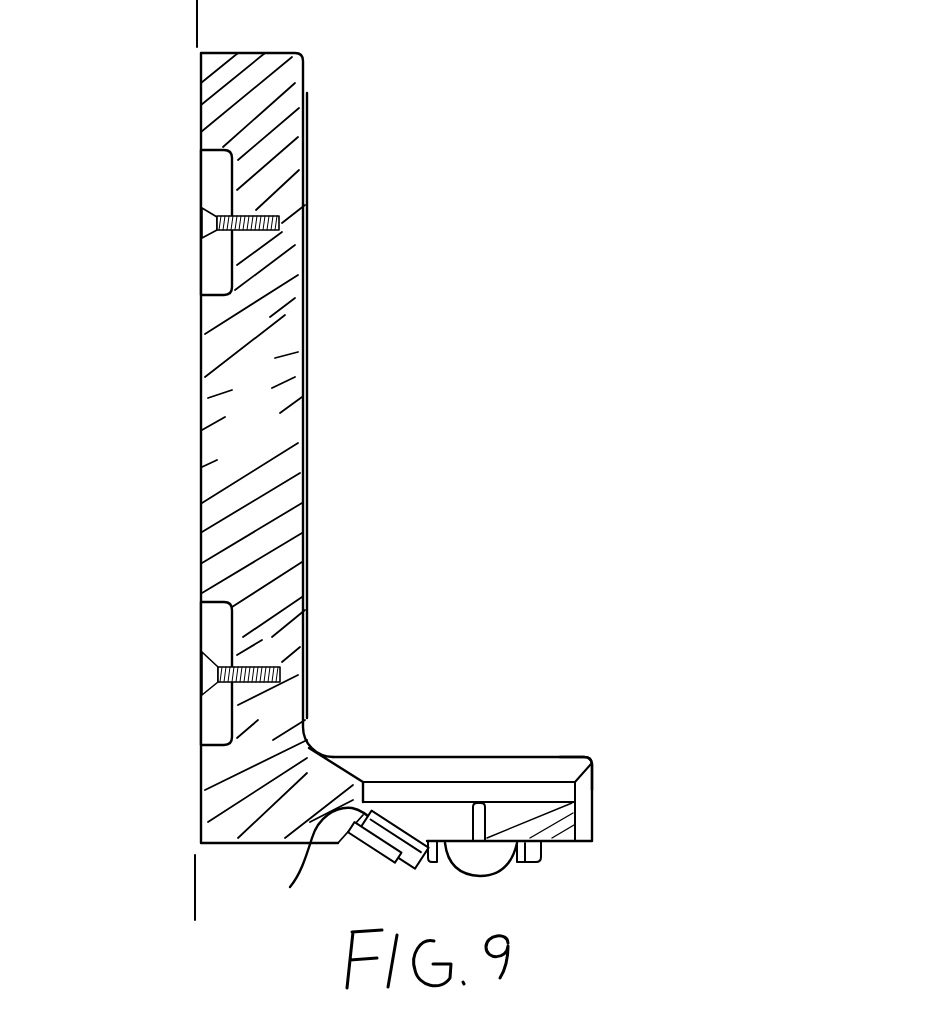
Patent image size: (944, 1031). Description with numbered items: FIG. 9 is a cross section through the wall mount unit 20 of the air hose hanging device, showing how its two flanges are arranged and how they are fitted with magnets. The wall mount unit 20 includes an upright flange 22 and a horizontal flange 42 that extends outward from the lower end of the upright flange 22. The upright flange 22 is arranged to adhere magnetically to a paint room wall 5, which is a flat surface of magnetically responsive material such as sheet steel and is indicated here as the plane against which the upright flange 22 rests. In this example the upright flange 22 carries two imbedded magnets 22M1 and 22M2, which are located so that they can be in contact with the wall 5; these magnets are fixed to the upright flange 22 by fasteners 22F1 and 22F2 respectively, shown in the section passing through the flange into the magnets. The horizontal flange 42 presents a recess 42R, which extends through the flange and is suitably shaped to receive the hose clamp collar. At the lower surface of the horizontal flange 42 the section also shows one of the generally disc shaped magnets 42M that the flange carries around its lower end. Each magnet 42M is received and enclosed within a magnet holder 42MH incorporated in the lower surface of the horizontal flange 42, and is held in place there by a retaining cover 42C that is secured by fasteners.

The paint room wall 5 is at (192, 10).
The wall mount unit 20 is at (400, 358).
The upright flange 22 is at (272, 445).
The fastener 22F1 is at (203, 680).
The fastener 22F2 is at (205, 228).
The imbedded magnet 22M1 is at (220, 265).
The imbedded magnet 22M2 is at (213, 717).
The horizontal flange 42 is at (593, 795).
The recess 42R is at (430, 750).
The magnet holder 42MH is at (472, 858).
The magnet 42M is at (291, 886).
The retaining cover 42C is at (400, 868).